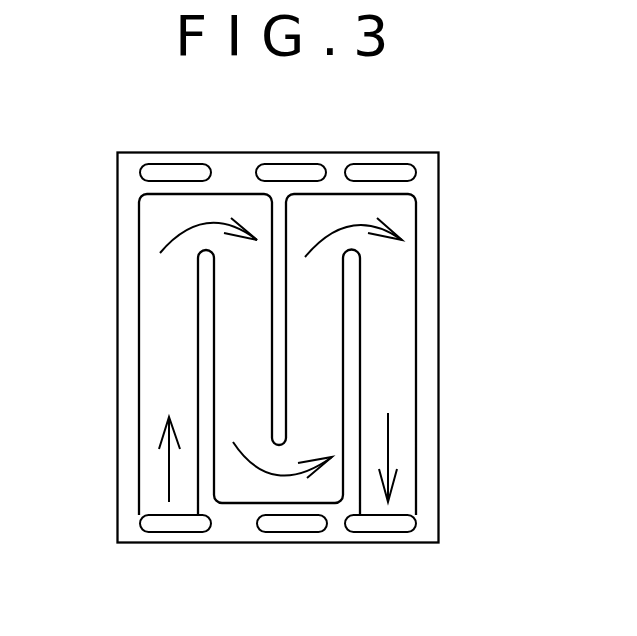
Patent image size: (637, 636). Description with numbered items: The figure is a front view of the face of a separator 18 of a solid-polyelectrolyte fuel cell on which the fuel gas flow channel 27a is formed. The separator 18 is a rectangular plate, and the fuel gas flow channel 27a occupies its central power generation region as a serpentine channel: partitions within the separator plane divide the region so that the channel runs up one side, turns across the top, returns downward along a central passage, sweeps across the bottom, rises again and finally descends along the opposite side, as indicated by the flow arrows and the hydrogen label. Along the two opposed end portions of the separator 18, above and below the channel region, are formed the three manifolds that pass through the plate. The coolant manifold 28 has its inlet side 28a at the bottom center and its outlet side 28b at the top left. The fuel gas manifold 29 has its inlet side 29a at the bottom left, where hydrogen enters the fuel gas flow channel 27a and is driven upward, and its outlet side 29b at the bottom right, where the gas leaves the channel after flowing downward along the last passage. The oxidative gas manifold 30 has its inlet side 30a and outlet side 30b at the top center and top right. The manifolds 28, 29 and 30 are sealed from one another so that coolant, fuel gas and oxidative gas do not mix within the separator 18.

The separator 18 is at (450, 290).
The fuel gas flow channel 27a is at (140, 325).
The coolant manifold 28 is at (241, 350).
The coolant manifold inlet side 28a is at (293, 523).
The coolant manifold outlet side 28b is at (172, 172).
The fuel gas manifold 29 is at (307, 555).
The fuel gas manifold inlet side 29a is at (172, 525).
The fuel gas manifold outlet side 29b is at (392, 523).
The oxidative gas manifold 30 is at (374, 143).
The oxidative gas manifold inlet side 30a is at (292, 173).
The oxidative gas manifold outlet side 30b is at (400, 173).